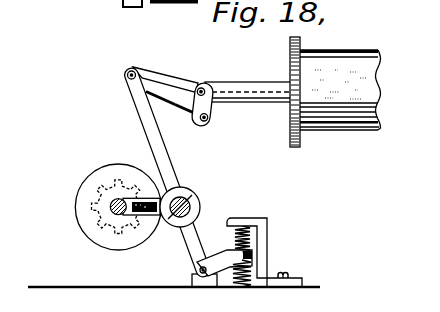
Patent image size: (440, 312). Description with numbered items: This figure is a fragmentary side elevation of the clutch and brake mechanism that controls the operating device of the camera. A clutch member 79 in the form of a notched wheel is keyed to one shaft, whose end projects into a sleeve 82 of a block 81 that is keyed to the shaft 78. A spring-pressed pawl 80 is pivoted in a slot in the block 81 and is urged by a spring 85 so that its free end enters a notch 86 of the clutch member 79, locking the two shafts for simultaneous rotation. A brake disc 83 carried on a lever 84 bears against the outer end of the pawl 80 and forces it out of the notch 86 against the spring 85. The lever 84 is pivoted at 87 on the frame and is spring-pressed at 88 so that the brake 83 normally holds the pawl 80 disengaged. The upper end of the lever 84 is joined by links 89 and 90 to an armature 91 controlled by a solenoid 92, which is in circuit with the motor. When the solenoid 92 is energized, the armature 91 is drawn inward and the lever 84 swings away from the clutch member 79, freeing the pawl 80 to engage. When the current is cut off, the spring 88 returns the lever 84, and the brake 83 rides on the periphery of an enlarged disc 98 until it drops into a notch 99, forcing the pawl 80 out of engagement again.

The shaft 78 is at (95, 225).
The clutch member 79 is at (117, 218).
The pawl 80 is at (151, 218).
The block 81 is at (147, 176).
The sleeve 82 is at (107, 179).
The brake disc 83 is at (196, 192).
The lever 84 is at (176, 126).
The spring 85 is at (163, 121).
The notch 86 is at (100, 205).
The pivot 87 is at (205, 260).
The spring 88 is at (250, 264).
The link 89 is at (166, 88).
The link 90 is at (212, 109).
The armature 91 is at (250, 90).
The solenoid 92 is at (360, 50).
The enlarged disc 98 is at (77, 218).
The notch 99 is at (165, 189).